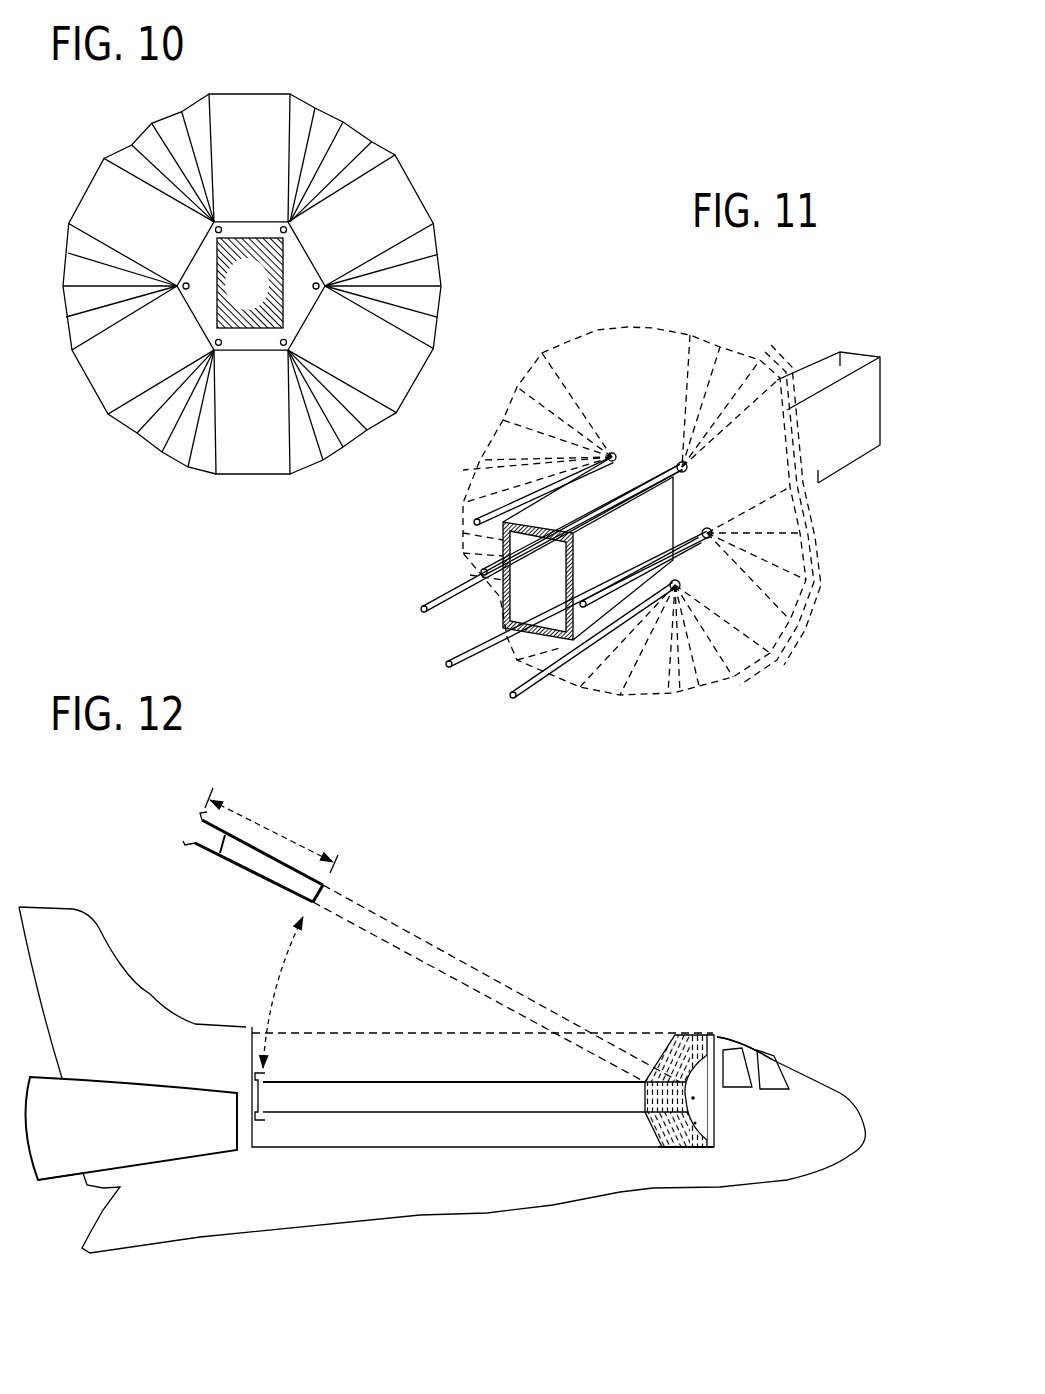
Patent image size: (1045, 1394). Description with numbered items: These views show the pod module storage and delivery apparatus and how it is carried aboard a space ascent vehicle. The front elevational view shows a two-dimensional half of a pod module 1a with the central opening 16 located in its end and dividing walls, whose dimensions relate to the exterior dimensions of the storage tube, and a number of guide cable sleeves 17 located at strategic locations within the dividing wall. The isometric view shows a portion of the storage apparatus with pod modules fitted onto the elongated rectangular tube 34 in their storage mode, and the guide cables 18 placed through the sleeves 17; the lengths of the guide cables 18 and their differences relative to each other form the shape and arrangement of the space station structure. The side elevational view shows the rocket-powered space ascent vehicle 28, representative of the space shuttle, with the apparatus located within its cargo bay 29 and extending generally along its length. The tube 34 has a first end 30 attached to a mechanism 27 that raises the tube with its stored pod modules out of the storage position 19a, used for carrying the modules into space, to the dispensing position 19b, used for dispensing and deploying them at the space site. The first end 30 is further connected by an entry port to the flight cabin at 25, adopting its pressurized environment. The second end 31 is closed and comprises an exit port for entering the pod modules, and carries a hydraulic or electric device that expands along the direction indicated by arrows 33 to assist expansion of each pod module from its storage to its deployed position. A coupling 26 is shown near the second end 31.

In FIG. 10, the pod module 1a is at (280, 105).
In FIG. 10, the opening 16 is at (242, 290).
In FIG. 10, the guide cable sleeves 17 is at (282, 348).
In FIG. 11, the guide cable sleeves 17 is at (676, 591).
In FIG. 11, the elongated rectangular tube 34 is at (828, 417).
In FIG. 12, the elongated rectangular tube 34 is at (542, 1100).
In FIG. 11, the guide cables 18 is at (522, 703).
In FIG. 12, the direction of operation of the hydraulic or electric device 33 is at (271, 830).
In FIG. 12, the second end of the tube 31 is at (302, 891).
In FIG. 12, the storage position 19a is at (482, 1054).
In FIG. 12, the dispensing position 19b is at (471, 983).
In FIG. 12, the coupling 26 is at (256, 1068).
In FIG. 12, the space shuttle flight cabin connection 25 is at (717, 1037).
In FIG. 12, the raising mechanism 27 is at (720, 1110).
In FIG. 12, the space ascent vehicle 28 is at (810, 1158).
In FIG. 12, the cargo bay 29 is at (463, 1130).
In FIG. 12, the first end of the tube 30 is at (688, 1147).